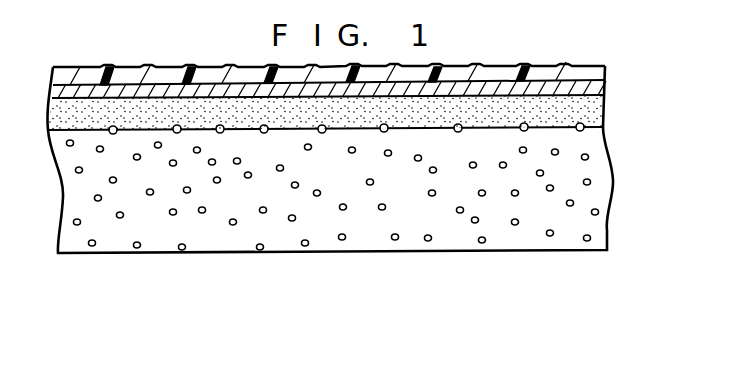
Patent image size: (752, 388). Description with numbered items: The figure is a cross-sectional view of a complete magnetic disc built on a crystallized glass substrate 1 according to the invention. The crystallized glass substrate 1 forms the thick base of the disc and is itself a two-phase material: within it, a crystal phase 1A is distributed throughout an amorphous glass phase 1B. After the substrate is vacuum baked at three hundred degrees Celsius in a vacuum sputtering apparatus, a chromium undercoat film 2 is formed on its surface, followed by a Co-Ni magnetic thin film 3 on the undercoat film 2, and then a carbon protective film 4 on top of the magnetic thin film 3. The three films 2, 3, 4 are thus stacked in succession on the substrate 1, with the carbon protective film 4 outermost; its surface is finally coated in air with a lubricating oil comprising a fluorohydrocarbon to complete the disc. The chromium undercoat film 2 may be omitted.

The crystallized glass substrate 1 is at (361, 194).
The crystal phase 1A is at (343, 241).
The amorphous glass phase 1B is at (520, 240).
The chromium undercoat film 2 is at (595, 117).
The magnetic thin film 3 is at (597, 90).
The carbon protective film 4 is at (603, 74).